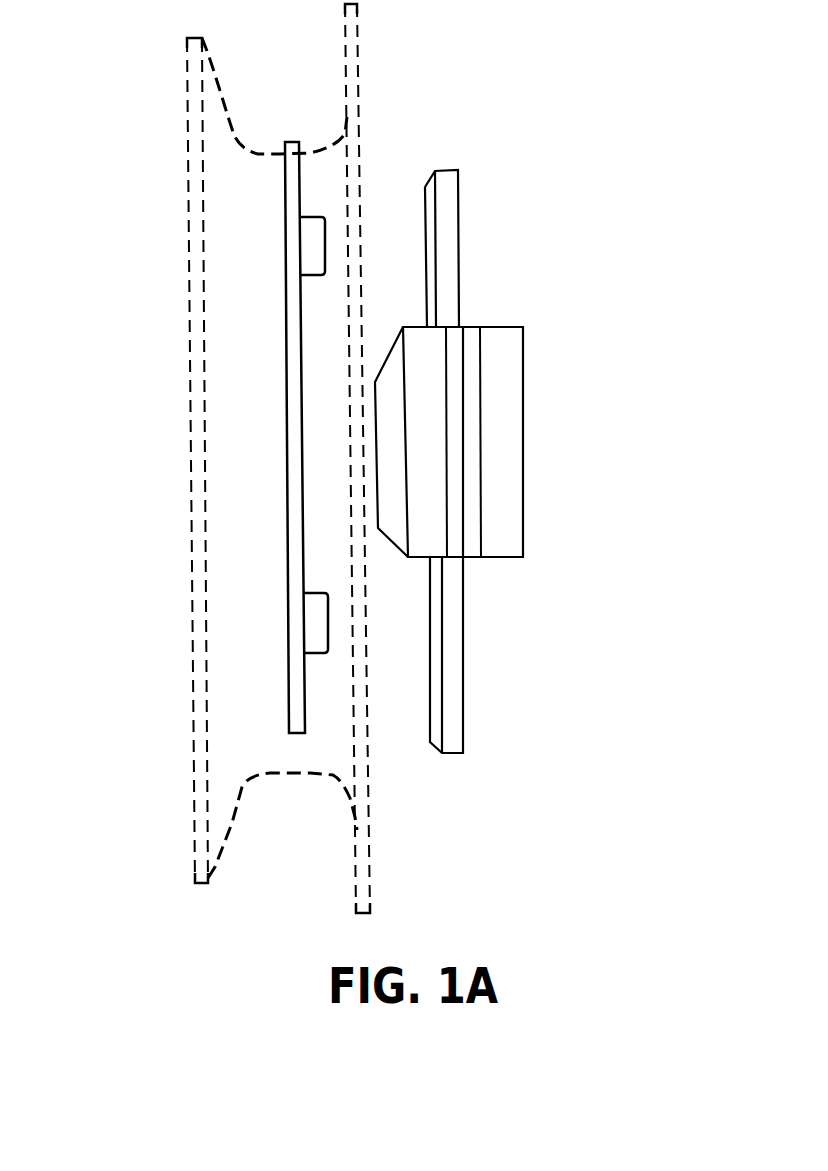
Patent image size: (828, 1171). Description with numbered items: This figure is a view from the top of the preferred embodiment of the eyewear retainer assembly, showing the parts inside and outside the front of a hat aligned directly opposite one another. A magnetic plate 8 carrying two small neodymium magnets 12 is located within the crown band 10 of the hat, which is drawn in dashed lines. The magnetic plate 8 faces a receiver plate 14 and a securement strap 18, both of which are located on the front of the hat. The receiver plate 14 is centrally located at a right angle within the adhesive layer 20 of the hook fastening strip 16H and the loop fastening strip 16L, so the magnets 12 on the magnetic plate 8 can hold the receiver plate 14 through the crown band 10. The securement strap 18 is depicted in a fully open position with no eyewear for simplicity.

The magnetic plate 8 is at (287, 195).
The hat crown band 10 is at (365, 825).
The neodymium magnet 12 is at (307, 243).
The receiver plate 14 is at (450, 692).
The hook fastening strip 16H is at (398, 363).
The loop fastening strip 16L is at (507, 350).
The securement strap 18 is at (562, 420).
The adhesive layer 20 is at (470, 457).